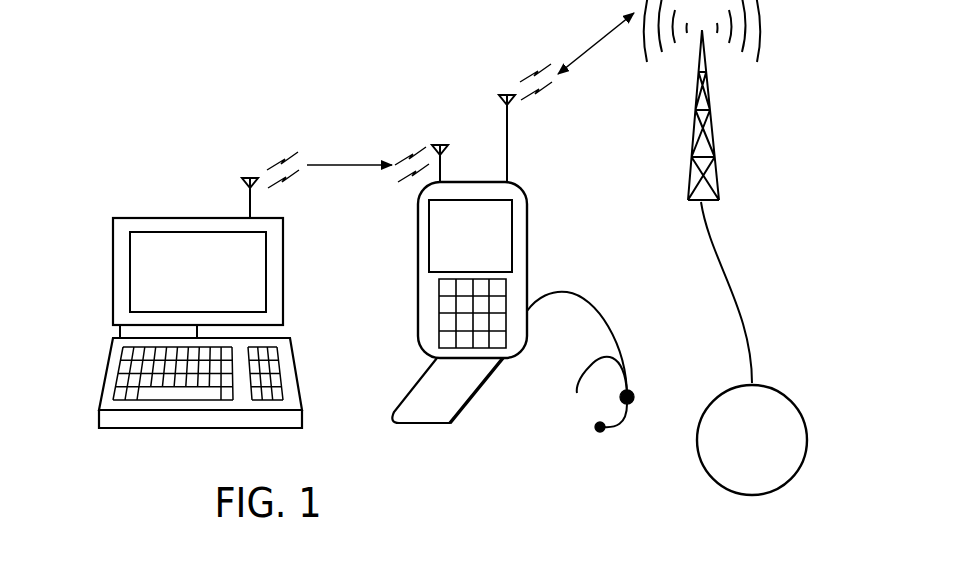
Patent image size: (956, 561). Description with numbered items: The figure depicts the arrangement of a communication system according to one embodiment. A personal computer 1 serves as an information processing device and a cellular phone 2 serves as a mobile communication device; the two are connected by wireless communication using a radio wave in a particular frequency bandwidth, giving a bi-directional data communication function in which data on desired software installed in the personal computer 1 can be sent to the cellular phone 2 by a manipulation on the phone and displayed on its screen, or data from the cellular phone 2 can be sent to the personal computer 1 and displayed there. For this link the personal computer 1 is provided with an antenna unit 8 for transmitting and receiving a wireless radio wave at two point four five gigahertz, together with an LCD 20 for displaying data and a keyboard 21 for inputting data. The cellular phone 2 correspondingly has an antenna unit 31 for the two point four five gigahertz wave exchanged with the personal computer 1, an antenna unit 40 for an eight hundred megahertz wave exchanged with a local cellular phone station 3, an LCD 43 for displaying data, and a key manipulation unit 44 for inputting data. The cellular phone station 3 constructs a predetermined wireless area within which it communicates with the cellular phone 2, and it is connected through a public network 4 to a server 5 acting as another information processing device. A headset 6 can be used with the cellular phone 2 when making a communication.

The personal computer 1 is at (181, 328).
The LCD 20 is at (137, 278).
The keyboard 21 is at (123, 368).
The antenna unit 8 is at (245, 203).
The cellular phone 2 is at (491, 259).
The antenna unit 31 is at (445, 168).
The antenna unit 40 is at (510, 147).
The LCD 43 is at (503, 219).
The key manipulation unit 44 is at (440, 305).
The headset 6 is at (595, 427).
The cellular phone station 3 is at (718, 108).
The public network 4 is at (732, 280).
The server 5 is at (768, 383).